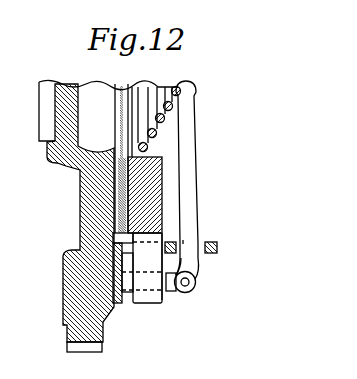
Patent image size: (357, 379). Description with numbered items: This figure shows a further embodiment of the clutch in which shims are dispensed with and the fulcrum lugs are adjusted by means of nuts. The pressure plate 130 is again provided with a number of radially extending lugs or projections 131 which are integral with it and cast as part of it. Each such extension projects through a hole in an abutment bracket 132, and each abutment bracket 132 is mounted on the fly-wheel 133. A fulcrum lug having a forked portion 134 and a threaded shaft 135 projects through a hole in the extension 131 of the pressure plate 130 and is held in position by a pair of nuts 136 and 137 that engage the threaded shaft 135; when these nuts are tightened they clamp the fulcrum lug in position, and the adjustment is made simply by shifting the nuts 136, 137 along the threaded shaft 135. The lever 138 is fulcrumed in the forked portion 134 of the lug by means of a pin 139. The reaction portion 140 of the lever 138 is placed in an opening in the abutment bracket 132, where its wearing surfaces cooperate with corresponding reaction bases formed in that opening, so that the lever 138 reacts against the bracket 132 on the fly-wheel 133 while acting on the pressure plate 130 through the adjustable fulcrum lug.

The pressure plate 130 is at (168, 173).
The radially extending lug 131 is at (158, 300).
The abutment bracket 132 is at (217, 252).
The fly-wheel 133 is at (75, 298).
The forked portion 134 is at (194, 271).
The threaded shaft 135 is at (122, 272).
The nut 136 is at (133, 303).
The nut 137 is at (168, 296).
The lever 138 is at (187, 189).
The pin 139 is at (193, 285).
The reaction portion 140 is at (190, 246).